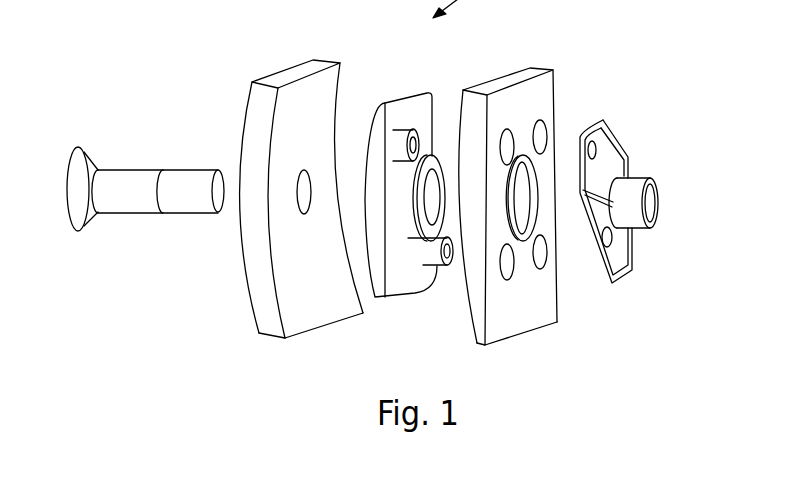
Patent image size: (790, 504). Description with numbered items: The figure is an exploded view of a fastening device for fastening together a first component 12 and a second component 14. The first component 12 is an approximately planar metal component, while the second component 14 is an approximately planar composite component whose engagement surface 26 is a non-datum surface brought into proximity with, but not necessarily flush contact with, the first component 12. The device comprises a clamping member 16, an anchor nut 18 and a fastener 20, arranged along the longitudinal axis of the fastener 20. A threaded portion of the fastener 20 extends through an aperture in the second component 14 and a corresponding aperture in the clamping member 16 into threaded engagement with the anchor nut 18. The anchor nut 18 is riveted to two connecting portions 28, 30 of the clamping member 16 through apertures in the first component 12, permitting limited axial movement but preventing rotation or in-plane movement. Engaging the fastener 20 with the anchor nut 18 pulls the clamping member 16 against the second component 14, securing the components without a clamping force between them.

The first component 12 is at (530, 72).
The second component 14 is at (315, 70).
The clamping member 16 is at (403, 283).
The anchor nut 18 is at (627, 142).
The fastener 20 is at (80, 163).
The engagement surface 26 is at (330, 110).
The connecting portion 28 is at (405, 128).
The connecting portion 30 is at (442, 265).